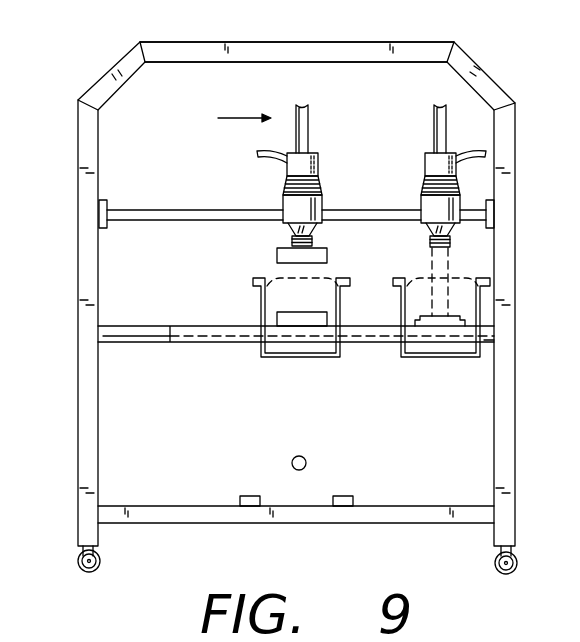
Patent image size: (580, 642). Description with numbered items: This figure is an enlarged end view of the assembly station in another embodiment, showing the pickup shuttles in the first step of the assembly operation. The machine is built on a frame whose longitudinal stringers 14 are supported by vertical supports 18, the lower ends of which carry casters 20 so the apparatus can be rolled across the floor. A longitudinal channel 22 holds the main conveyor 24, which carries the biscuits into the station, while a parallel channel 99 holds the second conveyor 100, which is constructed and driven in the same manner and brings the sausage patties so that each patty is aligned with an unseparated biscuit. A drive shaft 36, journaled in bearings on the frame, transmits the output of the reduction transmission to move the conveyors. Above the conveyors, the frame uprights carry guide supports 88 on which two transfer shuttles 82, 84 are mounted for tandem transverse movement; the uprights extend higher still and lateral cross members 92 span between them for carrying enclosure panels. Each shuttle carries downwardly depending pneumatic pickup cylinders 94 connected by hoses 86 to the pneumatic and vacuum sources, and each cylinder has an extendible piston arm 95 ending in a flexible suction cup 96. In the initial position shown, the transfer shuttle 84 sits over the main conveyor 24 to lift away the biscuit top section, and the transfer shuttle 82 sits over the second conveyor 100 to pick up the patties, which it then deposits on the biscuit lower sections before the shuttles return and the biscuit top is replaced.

The longitudinal stringers 14 is at (249, 496).
The vertical supports 18 is at (515, 291).
The casters 20 is at (78, 564).
The longitudinal channel 22 is at (291, 358).
The main conveyor 24 is at (318, 345).
The drive shaft 36 is at (307, 460).
The transfer shuttle 82 is at (421, 204).
The transfer shuttle 84 is at (283, 204).
The hoses 86 is at (482, 150).
The guide supports 88 is at (160, 207).
The lateral cross members 92 is at (357, 45).
The pneumatic pickup cylinders 94 is at (447, 231).
The piston arm 95 is at (432, 270).
The flexible suction cup 96 is at (292, 240).
The channel 99 is at (433, 358).
The second conveyor 100 is at (452, 350).